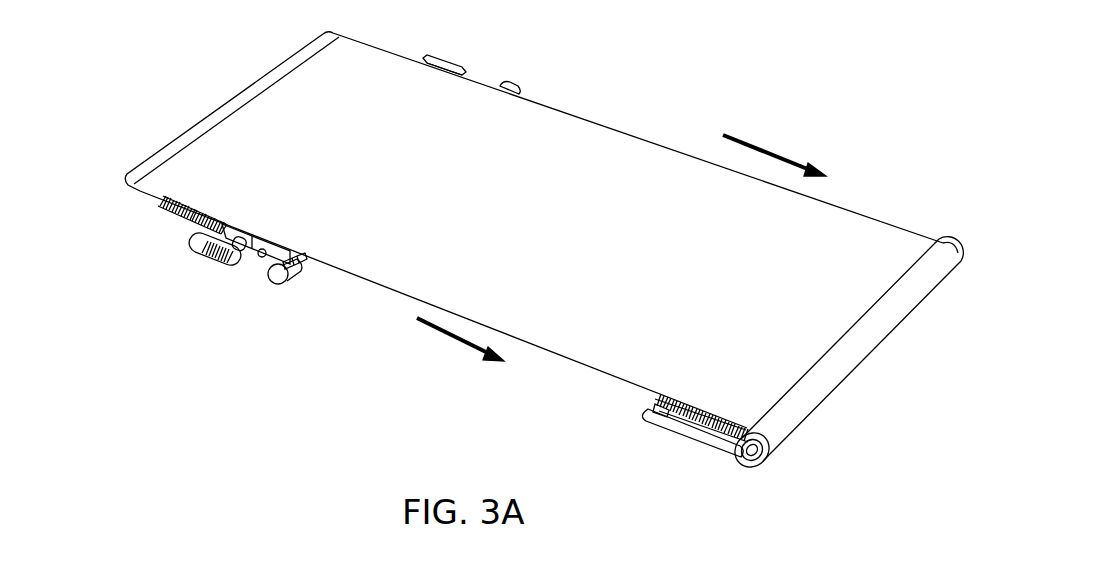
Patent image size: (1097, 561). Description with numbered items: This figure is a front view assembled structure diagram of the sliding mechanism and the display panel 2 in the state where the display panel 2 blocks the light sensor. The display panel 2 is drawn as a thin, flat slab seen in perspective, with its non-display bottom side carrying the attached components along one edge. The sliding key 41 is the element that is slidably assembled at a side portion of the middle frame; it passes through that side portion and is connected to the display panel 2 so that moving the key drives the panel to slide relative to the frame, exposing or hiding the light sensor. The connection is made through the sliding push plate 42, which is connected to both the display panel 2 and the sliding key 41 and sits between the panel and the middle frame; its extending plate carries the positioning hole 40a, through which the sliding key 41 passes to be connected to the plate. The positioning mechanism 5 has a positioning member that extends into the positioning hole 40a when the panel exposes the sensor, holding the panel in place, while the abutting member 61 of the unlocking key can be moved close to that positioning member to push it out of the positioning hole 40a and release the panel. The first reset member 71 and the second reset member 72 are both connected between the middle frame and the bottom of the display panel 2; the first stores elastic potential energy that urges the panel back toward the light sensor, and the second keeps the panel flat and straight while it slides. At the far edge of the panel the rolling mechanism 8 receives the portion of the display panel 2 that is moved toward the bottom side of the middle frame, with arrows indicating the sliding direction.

The display panel 2 is at (288, 90).
The rolling mechanism 8 is at (957, 247).
The sliding key 41 is at (447, 62).
The sliding push plate 42 is at (250, 248).
The positioning hole 40a is at (262, 255).
The abutting member 61 is at (510, 87).
The first reset member 71 is at (173, 208).
The second reset member 72 is at (657, 399).
The positioning mechanism 5 is at (307, 258).